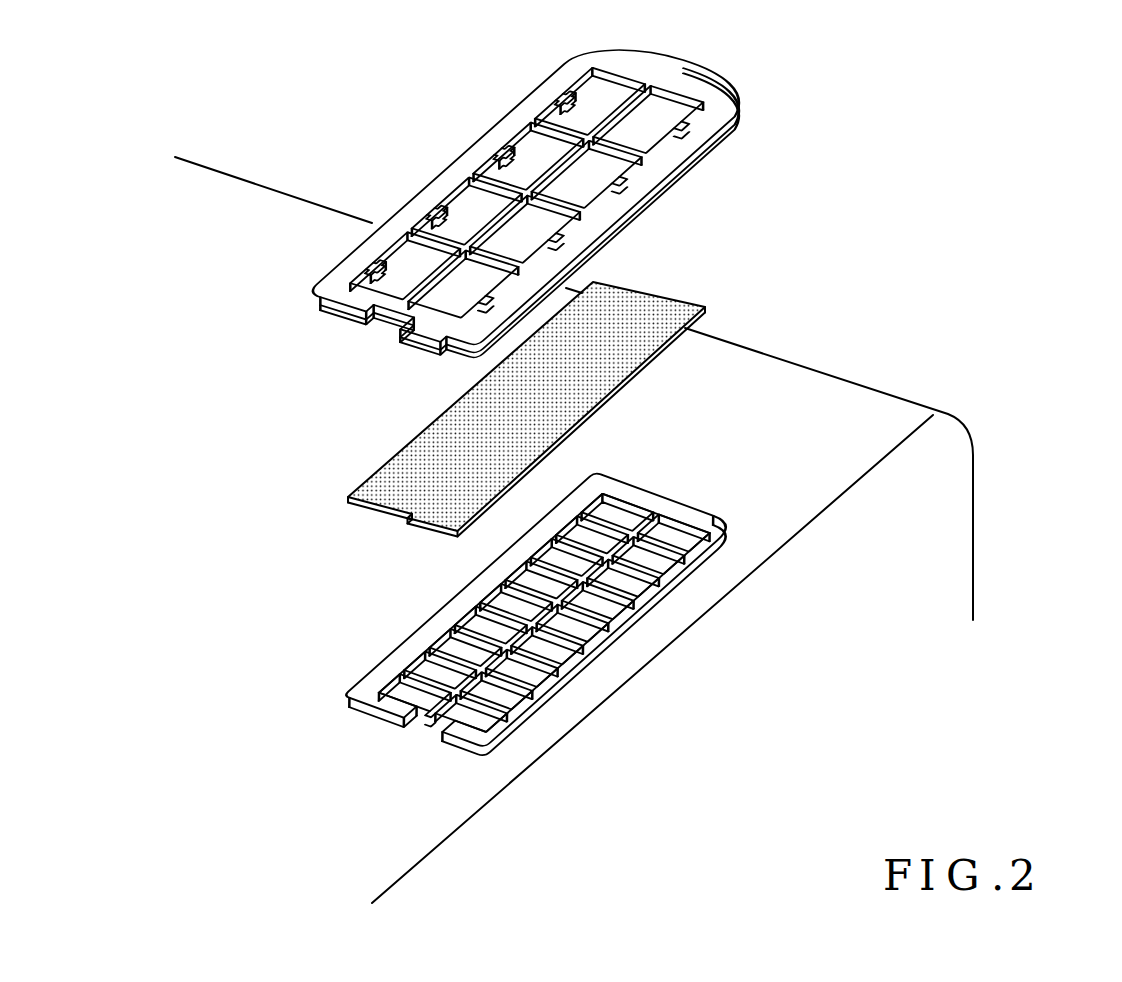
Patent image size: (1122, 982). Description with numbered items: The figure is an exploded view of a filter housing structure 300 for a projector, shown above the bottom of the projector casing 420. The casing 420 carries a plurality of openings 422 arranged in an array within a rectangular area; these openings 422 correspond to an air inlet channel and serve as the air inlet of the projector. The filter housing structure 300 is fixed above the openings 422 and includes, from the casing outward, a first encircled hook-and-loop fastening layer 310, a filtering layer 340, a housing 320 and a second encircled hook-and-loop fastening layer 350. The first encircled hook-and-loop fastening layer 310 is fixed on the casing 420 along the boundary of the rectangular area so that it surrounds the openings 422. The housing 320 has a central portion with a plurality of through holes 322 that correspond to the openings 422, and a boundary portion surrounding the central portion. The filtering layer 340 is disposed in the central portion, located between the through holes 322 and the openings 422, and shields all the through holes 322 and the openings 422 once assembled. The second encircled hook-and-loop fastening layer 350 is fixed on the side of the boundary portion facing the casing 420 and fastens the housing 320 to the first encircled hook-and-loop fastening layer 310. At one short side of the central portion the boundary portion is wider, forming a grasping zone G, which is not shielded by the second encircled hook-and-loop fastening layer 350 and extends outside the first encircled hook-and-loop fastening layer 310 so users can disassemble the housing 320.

The filter housing structure 300 is at (1012, 242).
The first encircled hook-and-loop fastening layer 310 is at (573, 614).
The housing 320 is at (548, 189).
The through holes 322 is at (477, 203).
The filtering layer 340 is at (665, 305).
The second encircled hook-and-loop fastening layer 350 is at (693, 173).
The casing 420 is at (858, 393).
The openings 422 is at (448, 660).
The grasping zone G is at (670, 72).